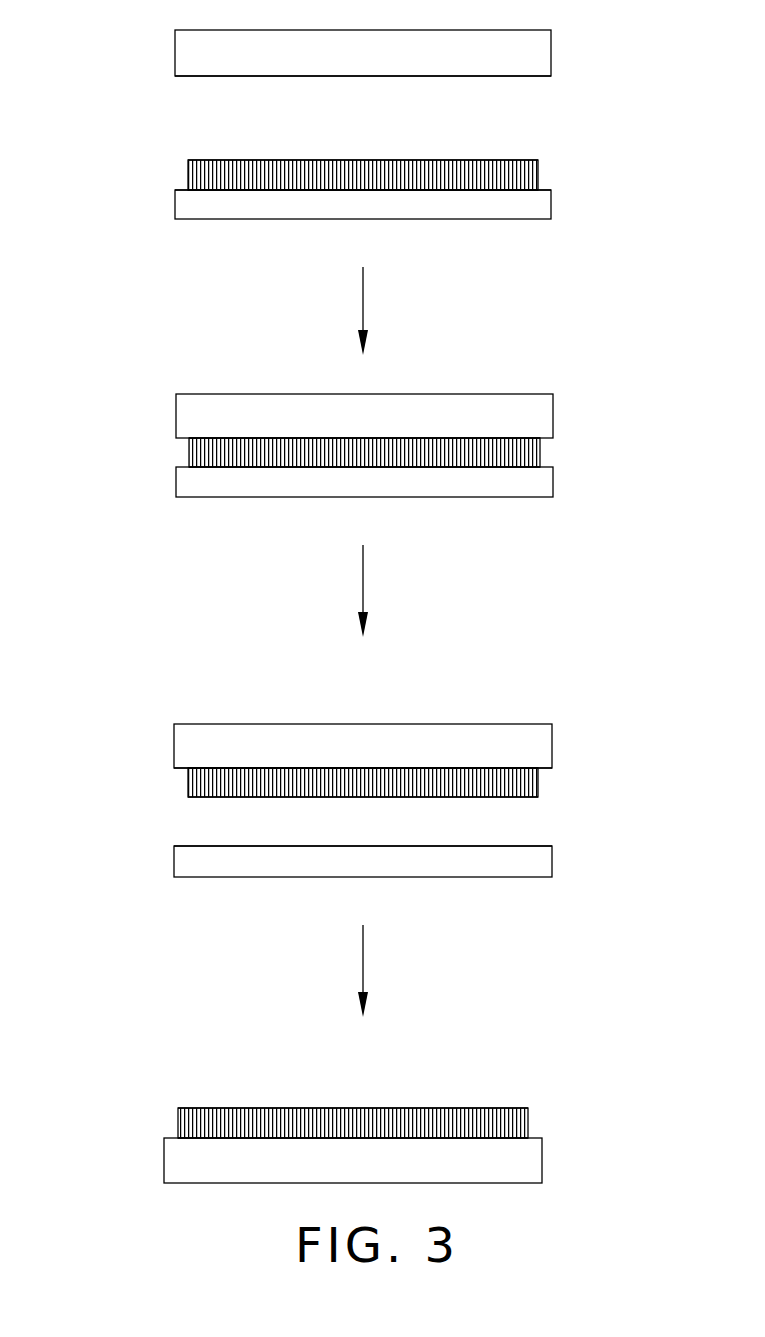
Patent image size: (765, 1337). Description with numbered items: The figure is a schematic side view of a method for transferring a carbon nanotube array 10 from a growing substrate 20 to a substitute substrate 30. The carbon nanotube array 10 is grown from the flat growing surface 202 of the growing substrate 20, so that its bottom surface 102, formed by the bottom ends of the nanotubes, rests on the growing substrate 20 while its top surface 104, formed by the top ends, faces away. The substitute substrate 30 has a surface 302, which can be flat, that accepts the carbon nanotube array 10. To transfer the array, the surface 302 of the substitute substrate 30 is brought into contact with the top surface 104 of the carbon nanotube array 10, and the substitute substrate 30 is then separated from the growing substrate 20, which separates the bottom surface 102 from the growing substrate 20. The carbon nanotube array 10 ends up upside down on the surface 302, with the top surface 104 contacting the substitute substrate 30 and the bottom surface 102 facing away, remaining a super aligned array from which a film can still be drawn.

The carbon nanotube array 10 is at (530, 172).
The growing substrate 20 is at (545, 208).
The substitute substrate 30 is at (535, 50).
The bottom surface 102 is at (215, 190).
The top surface 104 is at (220, 165).
The growing surface 202 is at (180, 190).
The surface 302 is at (195, 78).